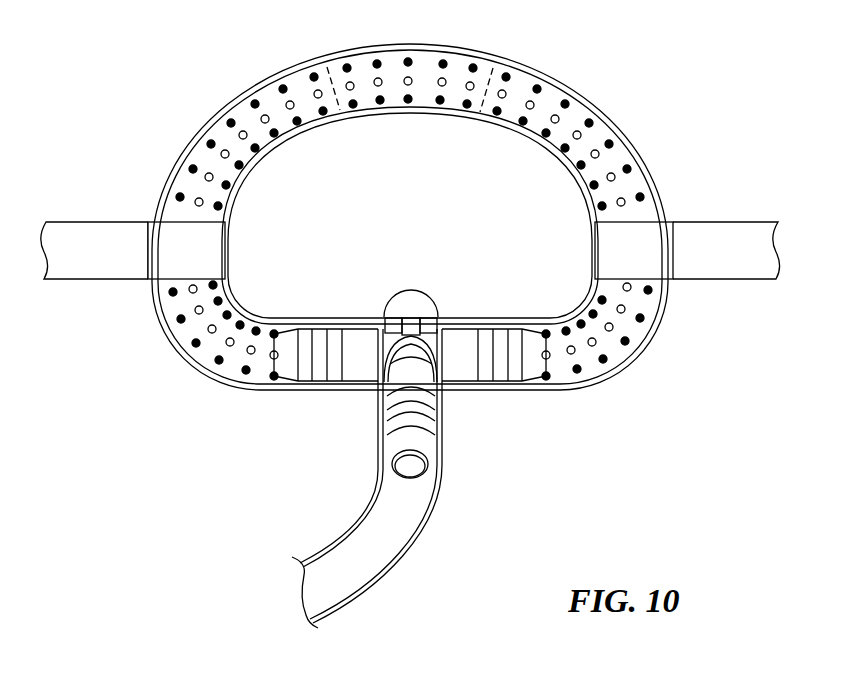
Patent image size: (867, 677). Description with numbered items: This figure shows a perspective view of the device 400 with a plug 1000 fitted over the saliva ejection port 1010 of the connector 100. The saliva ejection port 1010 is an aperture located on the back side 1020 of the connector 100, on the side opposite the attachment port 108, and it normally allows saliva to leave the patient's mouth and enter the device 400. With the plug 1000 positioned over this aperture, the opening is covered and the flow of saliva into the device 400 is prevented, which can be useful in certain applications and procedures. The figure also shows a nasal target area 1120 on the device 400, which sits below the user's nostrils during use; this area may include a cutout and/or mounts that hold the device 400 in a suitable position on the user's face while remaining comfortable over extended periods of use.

The device 400 is at (562, 161).
The nasal target area 1120 is at (340, 112).
The plug 1000 is at (405, 291).
The saliva ejection port 1010 is at (388, 316).
The back side 1020 is at (437, 316).
The connector 100 is at (384, 408).
The attachment port 108 is at (437, 427).